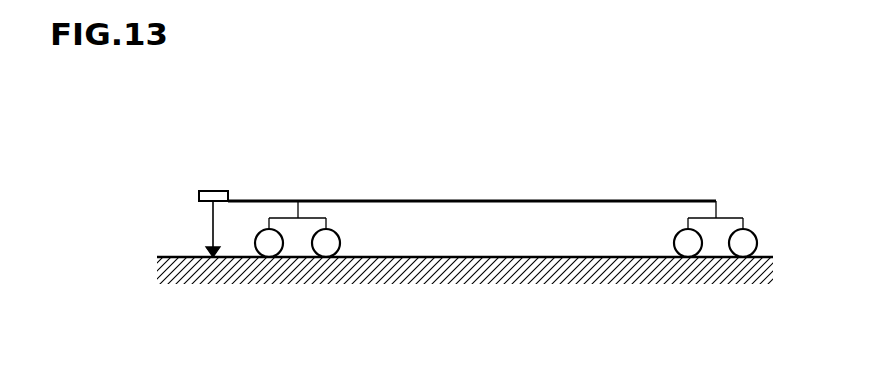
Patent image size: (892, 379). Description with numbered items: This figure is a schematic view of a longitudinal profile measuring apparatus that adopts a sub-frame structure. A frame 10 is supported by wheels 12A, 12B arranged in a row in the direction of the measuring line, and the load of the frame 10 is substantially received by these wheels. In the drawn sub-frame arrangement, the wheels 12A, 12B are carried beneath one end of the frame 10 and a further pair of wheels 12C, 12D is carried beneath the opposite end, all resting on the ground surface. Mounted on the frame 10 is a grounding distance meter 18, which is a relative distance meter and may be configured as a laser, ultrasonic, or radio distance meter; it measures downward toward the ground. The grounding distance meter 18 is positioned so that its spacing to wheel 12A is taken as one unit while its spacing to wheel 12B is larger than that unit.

The frame 10 is at (538, 200).
The wheel 12A is at (262, 238).
The wheel 12B is at (325, 238).
The wheel 12C is at (692, 238).
The wheel 12D is at (747, 238).
The grounding distance meter 18 is at (213, 190).